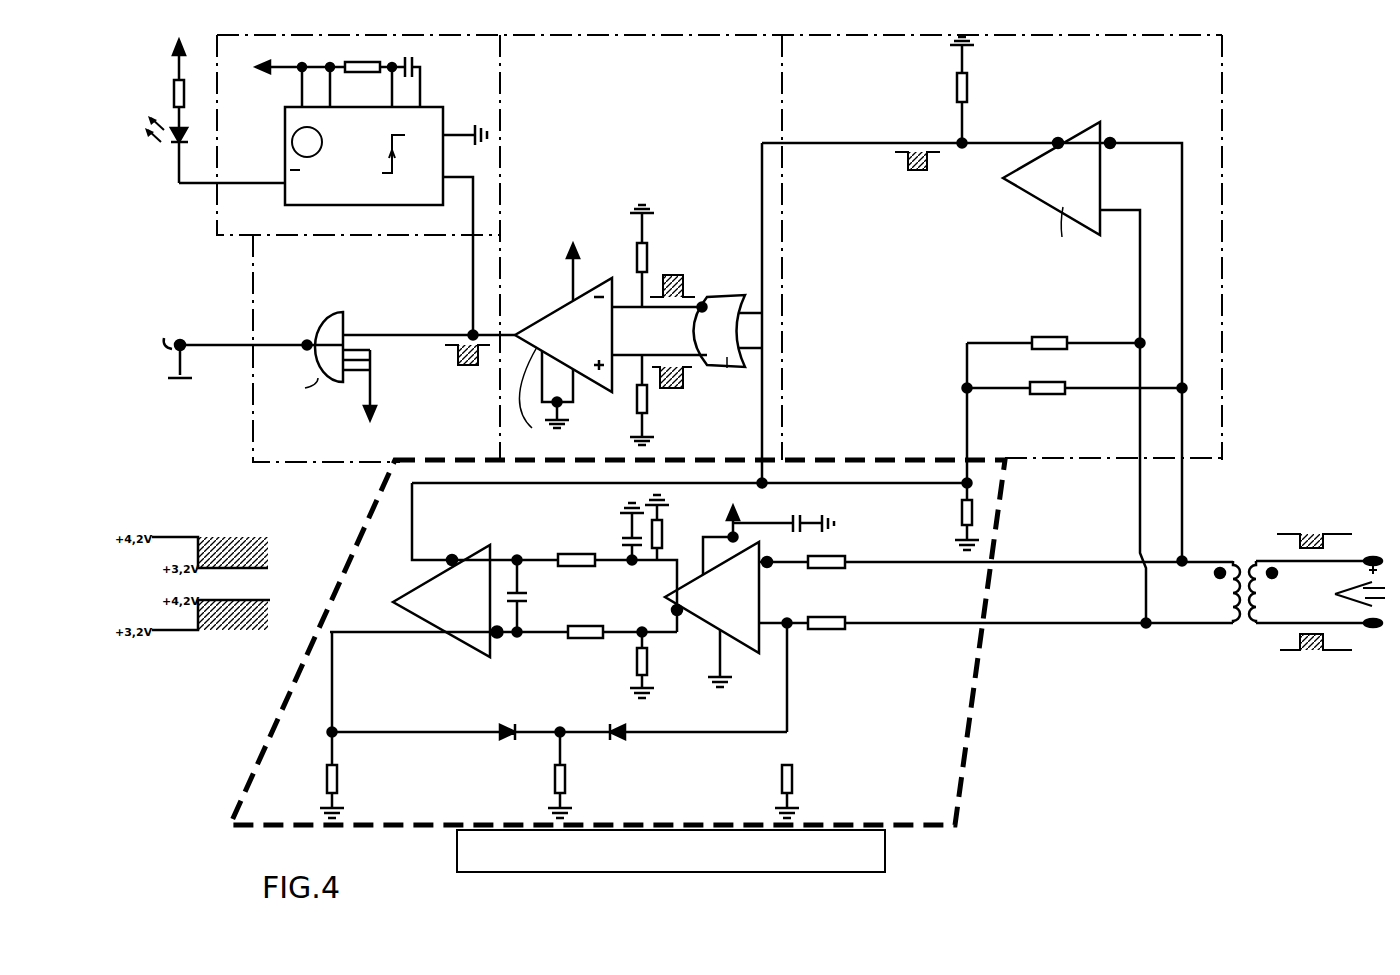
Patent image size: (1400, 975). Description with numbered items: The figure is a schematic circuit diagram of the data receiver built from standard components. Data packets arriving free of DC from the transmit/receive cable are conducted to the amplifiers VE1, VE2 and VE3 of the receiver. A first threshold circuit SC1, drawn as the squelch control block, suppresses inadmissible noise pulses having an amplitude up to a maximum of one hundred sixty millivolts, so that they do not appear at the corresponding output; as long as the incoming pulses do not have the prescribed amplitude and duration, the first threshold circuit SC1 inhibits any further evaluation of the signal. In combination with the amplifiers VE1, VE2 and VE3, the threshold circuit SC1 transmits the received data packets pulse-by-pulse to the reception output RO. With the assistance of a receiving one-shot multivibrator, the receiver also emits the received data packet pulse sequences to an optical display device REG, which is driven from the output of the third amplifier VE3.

The amplifier VE1 is at (974, 330).
The amplifier VE2 is at (632, 260).
The amplifier VE3 is at (347, 260).
The first threshold circuit SC1 is at (807, 666).
The optical display device REG is at (177, 144).
The reception output RO is at (161, 356).